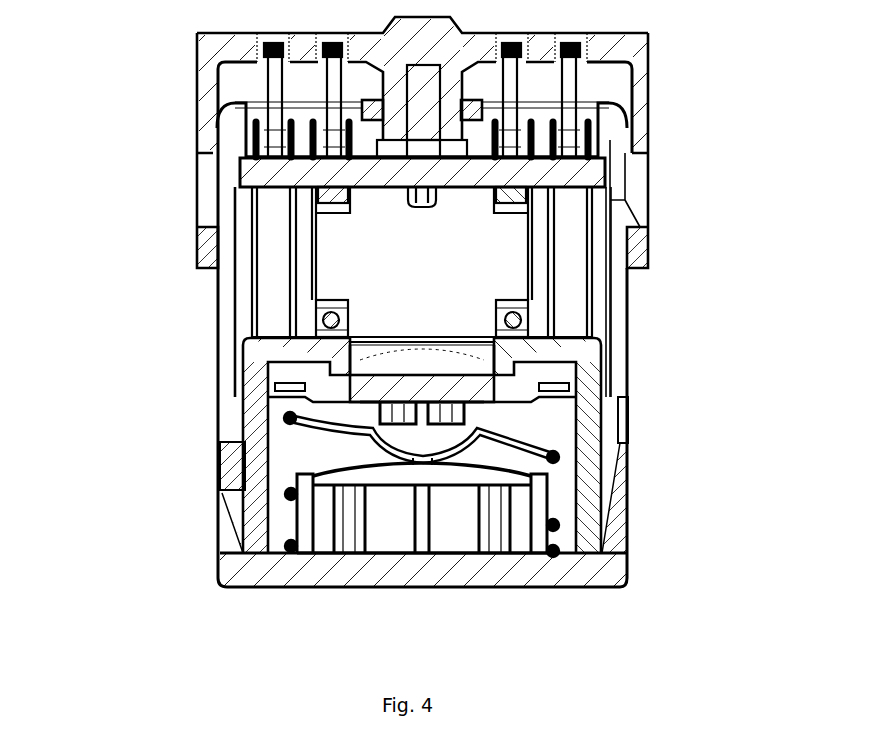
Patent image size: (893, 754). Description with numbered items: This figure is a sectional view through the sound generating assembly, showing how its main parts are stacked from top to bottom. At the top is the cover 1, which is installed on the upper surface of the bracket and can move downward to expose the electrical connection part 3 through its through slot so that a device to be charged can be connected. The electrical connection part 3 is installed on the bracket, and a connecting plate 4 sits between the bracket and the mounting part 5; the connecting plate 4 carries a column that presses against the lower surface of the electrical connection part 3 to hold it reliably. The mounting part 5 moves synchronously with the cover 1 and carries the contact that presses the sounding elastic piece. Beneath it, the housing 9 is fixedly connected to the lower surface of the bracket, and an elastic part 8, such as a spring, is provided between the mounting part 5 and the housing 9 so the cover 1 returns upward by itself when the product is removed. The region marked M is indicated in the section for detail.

The cover 1 is at (635, 68).
The electrical connection part 3 is at (278, 90).
The connecting plate 4 is at (553, 275).
The mounting part 5 is at (580, 365).
The elastic part 8 is at (556, 455).
The housing 9 is at (570, 570).
The detail region M is at (333, 545).